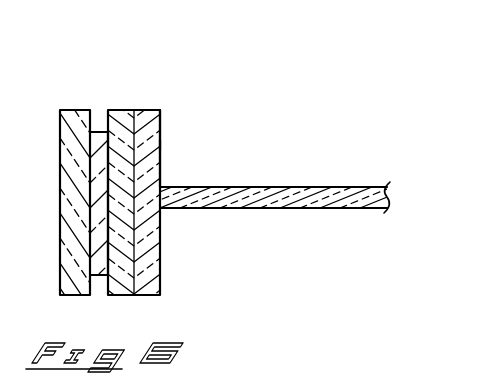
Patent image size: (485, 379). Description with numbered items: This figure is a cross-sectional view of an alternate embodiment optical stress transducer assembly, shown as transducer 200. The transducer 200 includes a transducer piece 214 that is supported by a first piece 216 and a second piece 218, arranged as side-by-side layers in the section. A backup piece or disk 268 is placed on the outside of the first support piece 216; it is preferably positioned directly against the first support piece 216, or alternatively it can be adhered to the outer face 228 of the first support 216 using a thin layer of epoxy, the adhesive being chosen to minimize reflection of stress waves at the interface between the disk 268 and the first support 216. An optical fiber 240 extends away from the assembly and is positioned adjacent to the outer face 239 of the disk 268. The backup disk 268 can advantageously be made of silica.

The transducer 200 is at (143, 84).
The second piece 218 is at (80, 110).
The transducer piece 214 is at (103, 131).
The first piece 216 is at (118, 113).
The backup piece or disk 268 is at (161, 133).
The outer face 239 is at (161, 147).
The outer face 228 is at (161, 177).
The optical fiber 240 is at (287, 187).